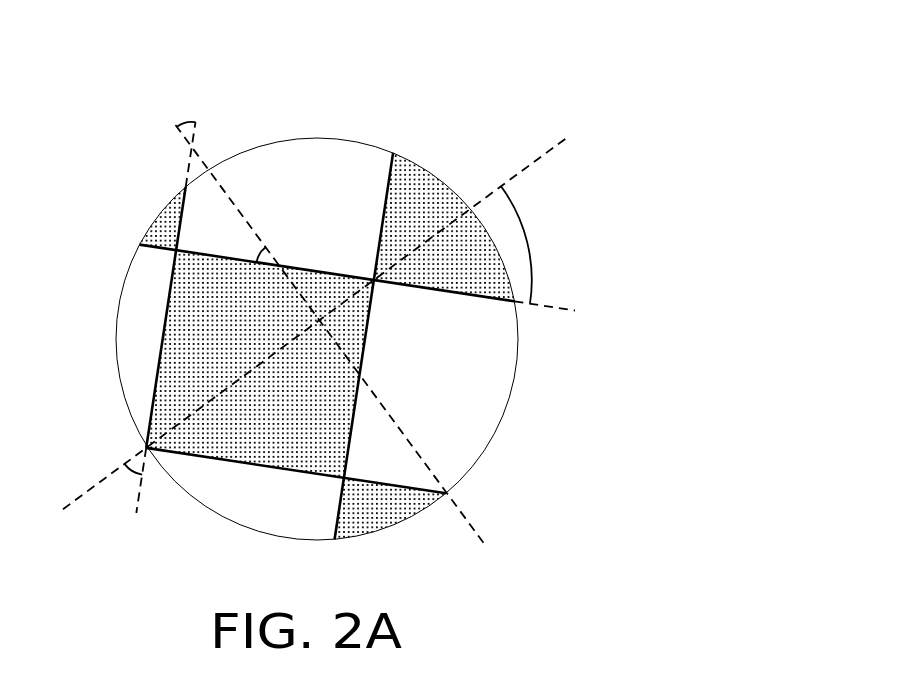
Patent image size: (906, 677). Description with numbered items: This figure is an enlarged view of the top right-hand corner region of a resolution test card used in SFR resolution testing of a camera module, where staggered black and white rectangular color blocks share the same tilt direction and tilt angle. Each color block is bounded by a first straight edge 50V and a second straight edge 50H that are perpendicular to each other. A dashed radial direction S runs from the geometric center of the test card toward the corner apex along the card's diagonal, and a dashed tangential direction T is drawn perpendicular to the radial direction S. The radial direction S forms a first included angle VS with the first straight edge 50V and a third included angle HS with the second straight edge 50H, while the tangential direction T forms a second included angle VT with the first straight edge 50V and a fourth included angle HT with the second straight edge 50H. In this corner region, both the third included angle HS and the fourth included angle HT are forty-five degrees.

The second straight edge 50H is at (154, 395).
The first straight edge 50V is at (315, 271).
The radial direction S is at (326, 312).
The tangential direction T is at (348, 347).
The fourth included angle HT is at (185, 111).
The second included angle VT is at (240, 250).
The first included angle VS is at (532, 244).
The third included angle HS is at (123, 486).